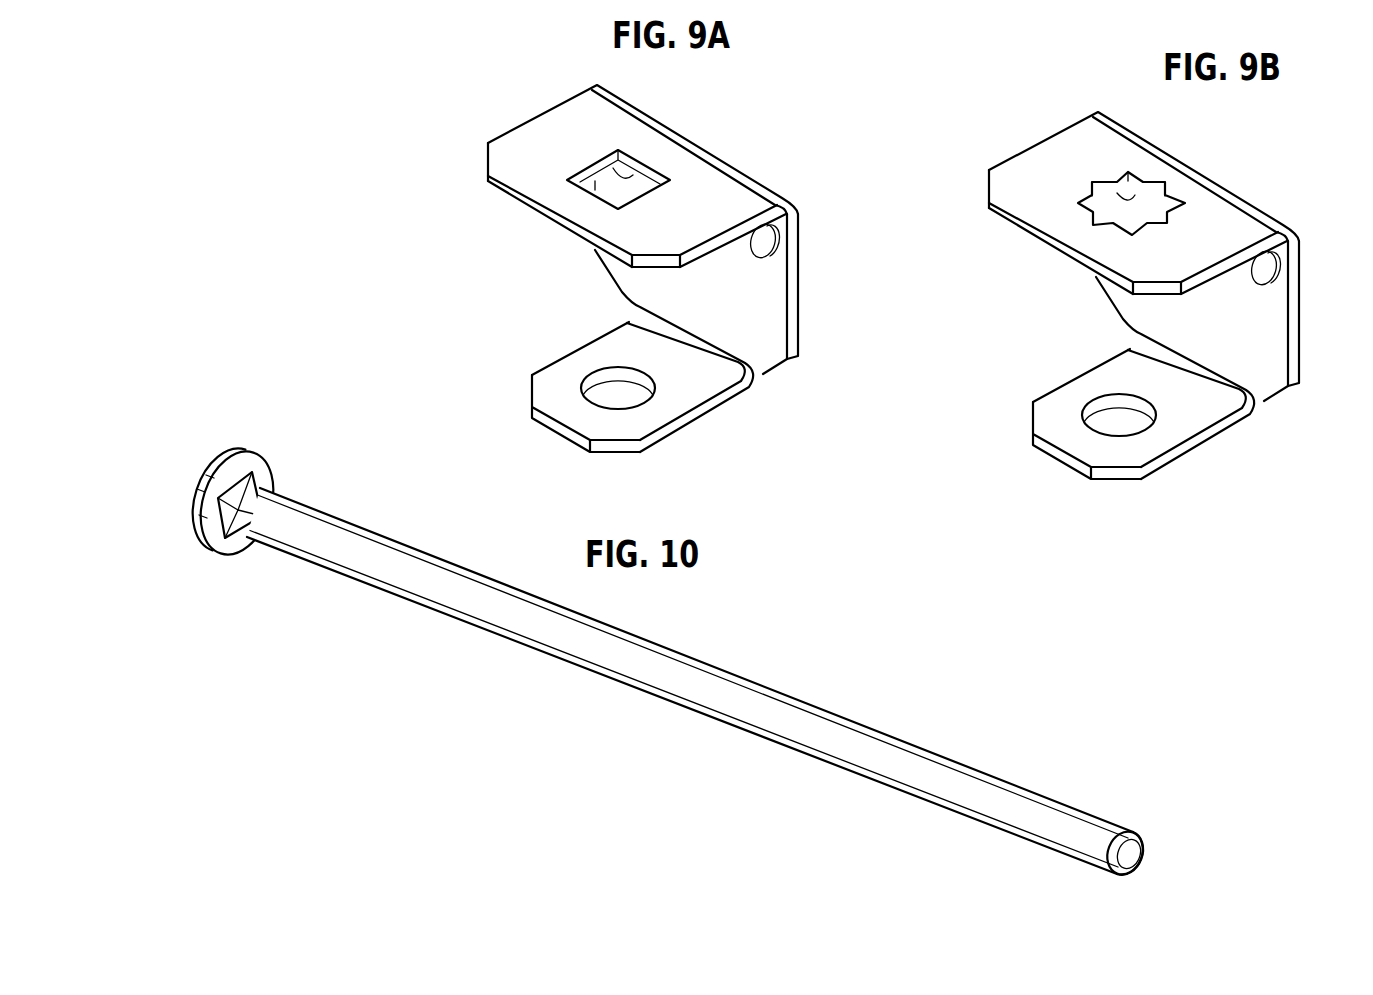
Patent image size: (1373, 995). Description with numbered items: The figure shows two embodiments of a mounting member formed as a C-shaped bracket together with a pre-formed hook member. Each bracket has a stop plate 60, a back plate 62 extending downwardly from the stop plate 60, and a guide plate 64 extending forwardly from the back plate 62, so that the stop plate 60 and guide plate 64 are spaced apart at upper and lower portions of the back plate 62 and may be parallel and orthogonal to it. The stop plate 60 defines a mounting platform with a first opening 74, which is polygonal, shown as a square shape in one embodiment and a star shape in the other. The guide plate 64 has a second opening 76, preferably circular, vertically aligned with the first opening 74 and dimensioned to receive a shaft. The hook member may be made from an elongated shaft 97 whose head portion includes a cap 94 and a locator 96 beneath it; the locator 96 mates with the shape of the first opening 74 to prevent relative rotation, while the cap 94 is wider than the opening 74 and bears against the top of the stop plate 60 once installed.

In FIG. 9A, the stop plate 60 is at (731, 193).
In FIG. 9B, the stop plate 60 is at (1238, 218).
In FIG. 9A, the back plate 62 is at (766, 289).
In FIG. 9B, the back plate 62 is at (1283, 318).
In FIG. 9A, the guide plate 64 is at (650, 410).
In FIG. 9B, the guide plate 64 is at (1150, 438).
In FIG. 9A, the first opening 74 is at (602, 166).
In FIG. 9B, the first opening 74 is at (1102, 188).
In FIG. 9A, the second opening 76 is at (603, 398).
In FIG. 9B, the second opening 76 is at (1105, 425).
In FIG. 10, the cap 94 is at (222, 460).
In FIG. 10, the locator 96 is at (230, 523).
In FIG. 10, the elongated shaft 97 is at (718, 674).